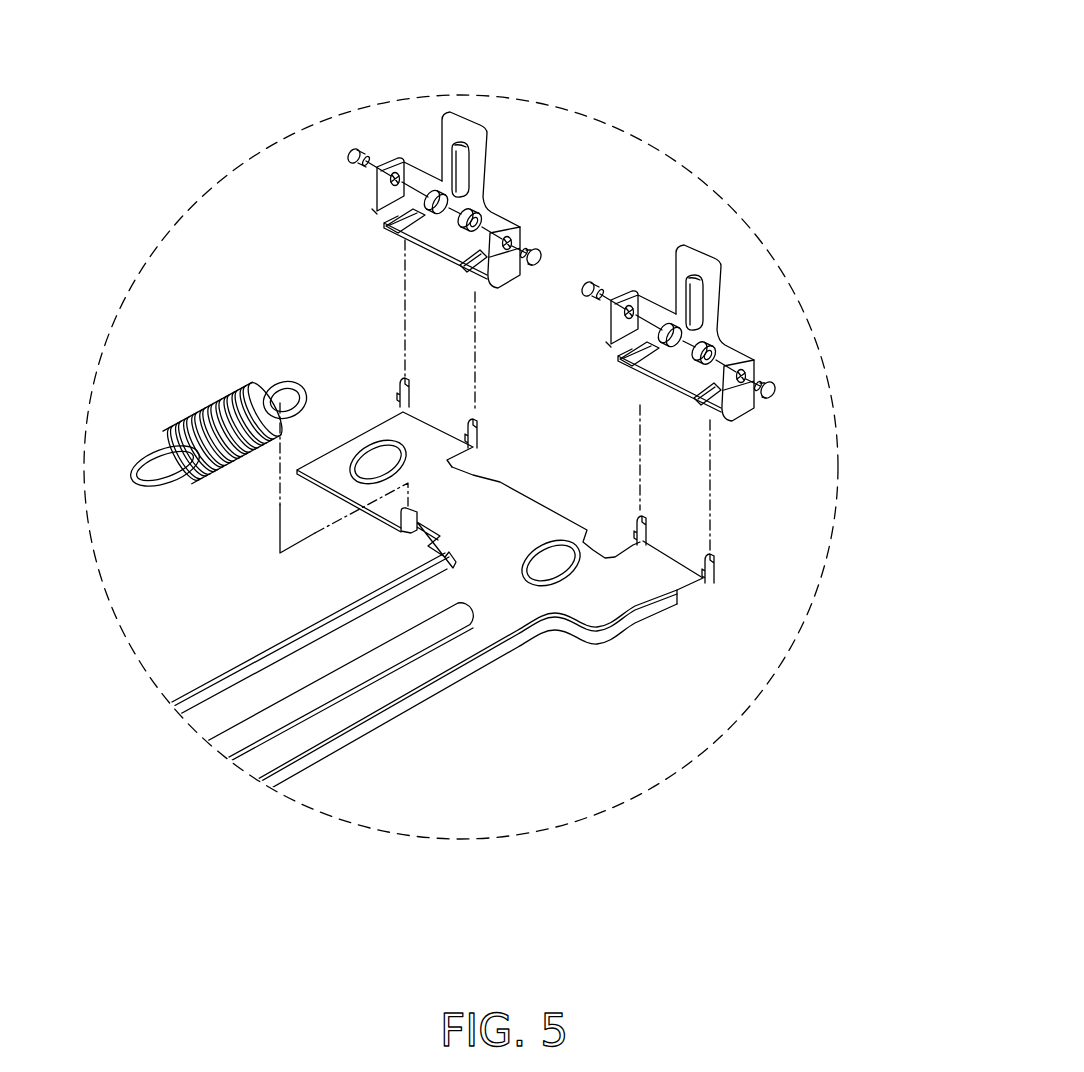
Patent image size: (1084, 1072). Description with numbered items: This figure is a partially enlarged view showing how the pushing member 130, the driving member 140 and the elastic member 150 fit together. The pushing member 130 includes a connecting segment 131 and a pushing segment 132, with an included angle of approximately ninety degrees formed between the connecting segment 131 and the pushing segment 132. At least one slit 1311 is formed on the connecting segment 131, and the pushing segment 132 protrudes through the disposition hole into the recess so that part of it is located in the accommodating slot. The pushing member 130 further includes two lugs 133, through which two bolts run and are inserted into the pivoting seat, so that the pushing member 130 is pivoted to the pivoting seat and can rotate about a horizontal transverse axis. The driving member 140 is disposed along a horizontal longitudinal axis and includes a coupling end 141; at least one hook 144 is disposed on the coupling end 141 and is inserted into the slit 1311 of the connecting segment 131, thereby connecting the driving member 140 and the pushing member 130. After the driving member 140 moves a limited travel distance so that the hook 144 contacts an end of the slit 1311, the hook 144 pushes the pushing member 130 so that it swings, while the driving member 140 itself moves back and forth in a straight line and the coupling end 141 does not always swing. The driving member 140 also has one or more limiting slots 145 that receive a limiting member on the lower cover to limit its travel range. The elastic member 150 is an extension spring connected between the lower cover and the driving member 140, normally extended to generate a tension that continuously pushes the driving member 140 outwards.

The pushing member 130 is at (412, 134).
The connecting segment 131 is at (430, 256).
The slit 1311 is at (387, 224).
The pushing segment 132 is at (722, 303).
The lugs 133 is at (633, 313).
The driving member 140 is at (229, 665).
The coupling end 141 is at (412, 703).
The hook 144 is at (468, 408).
The limiting slot 145 is at (370, 444).
The elastic member 150 is at (211, 400).